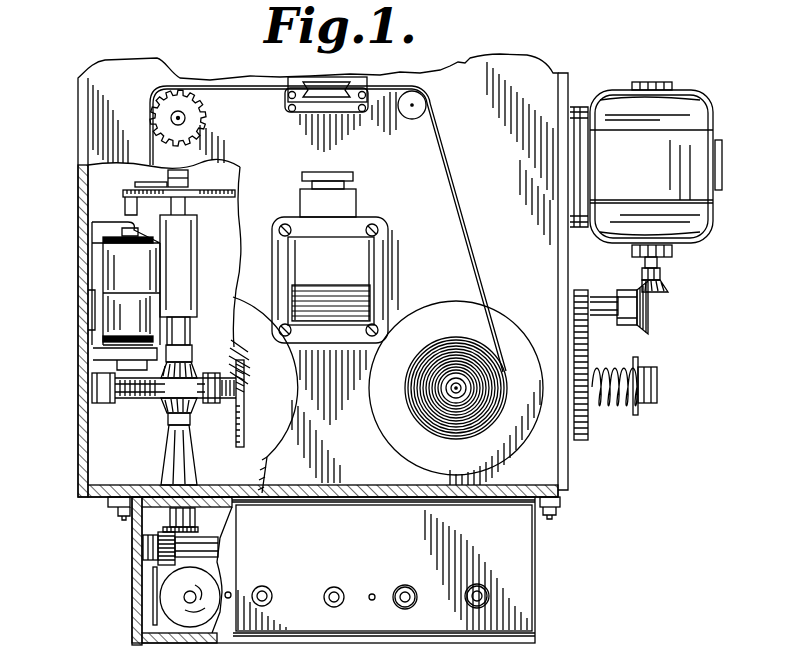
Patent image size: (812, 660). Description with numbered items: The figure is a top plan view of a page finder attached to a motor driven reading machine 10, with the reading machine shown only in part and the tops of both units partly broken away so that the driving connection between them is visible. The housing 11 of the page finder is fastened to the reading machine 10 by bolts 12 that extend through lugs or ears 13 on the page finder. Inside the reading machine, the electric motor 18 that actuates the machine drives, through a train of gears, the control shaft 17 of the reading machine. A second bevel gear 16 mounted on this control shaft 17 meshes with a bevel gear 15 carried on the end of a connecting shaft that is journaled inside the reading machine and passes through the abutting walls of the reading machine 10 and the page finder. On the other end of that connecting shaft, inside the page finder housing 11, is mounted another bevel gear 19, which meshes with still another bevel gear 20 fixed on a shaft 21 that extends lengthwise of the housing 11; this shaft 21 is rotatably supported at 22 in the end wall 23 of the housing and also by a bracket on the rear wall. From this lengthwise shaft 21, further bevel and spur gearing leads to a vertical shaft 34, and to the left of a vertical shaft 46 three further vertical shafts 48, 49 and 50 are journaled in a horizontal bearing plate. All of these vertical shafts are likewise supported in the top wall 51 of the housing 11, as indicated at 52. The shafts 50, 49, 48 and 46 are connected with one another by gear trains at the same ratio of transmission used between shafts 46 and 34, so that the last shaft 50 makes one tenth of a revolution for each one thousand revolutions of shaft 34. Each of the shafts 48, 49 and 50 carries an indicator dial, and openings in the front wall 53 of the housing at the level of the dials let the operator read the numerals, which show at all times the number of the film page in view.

The reading machine 10 is at (323, 275).
The housing 11 is at (548, 566).
The bolts 12 is at (122, 515).
The lugs or ears 13 is at (108, 502).
The bevel gear 15 is at (168, 404).
The second bevel gear 16 is at (206, 410).
The control shaft 17 is at (127, 393).
The electric motor 18 is at (714, 231).
The bevel gear 19 is at (198, 537).
The bevel gear 20 is at (160, 550).
The shaft 21 is at (192, 546).
The rotatable support 22 is at (143, 556).
The end wall 23 is at (132, 538).
The second vertical shaft 34 is at (480, 590).
The vertical shaft 46 is at (406, 594).
The vertical shaft 48 is at (336, 594).
The vertical shaft 49 is at (266, 592).
The vertical shaft 50 is at (203, 587).
The top wall 51 is at (520, 600).
The shaft support 52 is at (472, 600).
The front wall 53 is at (536, 636).